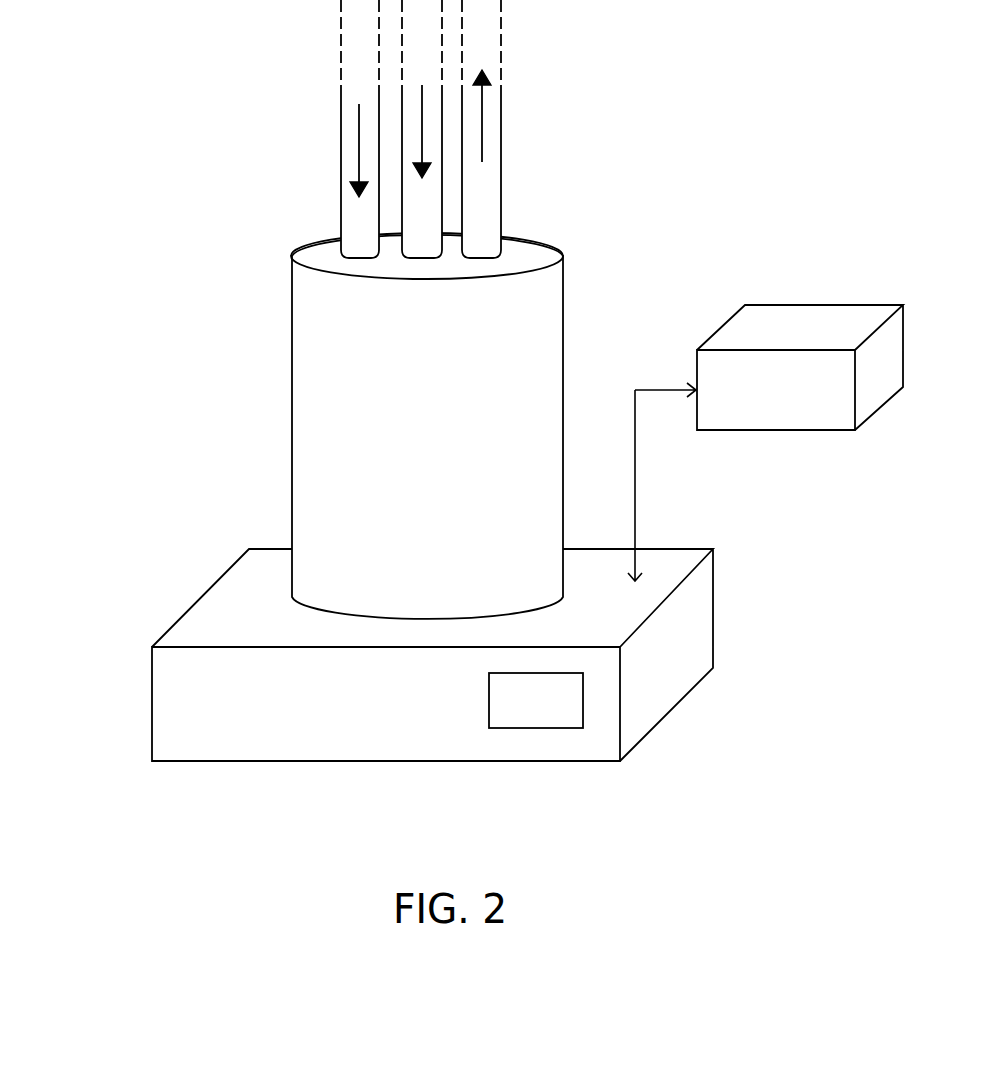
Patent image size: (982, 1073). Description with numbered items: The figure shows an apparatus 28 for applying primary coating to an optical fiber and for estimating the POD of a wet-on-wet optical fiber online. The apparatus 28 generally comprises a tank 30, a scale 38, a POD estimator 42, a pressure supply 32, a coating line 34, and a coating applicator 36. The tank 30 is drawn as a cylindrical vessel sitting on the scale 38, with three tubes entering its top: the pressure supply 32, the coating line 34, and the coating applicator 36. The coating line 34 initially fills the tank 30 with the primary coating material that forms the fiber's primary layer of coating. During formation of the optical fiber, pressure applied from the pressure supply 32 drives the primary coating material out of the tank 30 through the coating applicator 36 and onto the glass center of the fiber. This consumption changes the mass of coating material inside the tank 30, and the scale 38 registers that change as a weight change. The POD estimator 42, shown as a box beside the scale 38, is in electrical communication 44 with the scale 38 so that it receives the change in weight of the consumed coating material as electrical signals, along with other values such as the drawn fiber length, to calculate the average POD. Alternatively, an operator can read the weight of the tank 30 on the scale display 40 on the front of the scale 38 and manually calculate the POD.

The apparatus 28 is at (107, 395).
The tank 30 is at (440, 442).
The pressure supply 32 is at (360, 223).
The coating line 34 is at (422, 198).
The coating applicator 36 is at (482, 228).
The scale 38 is at (408, 712).
The scale display 40 is at (522, 703).
The POD estimator 42 is at (793, 400).
The electrical communication 44 is at (635, 477).